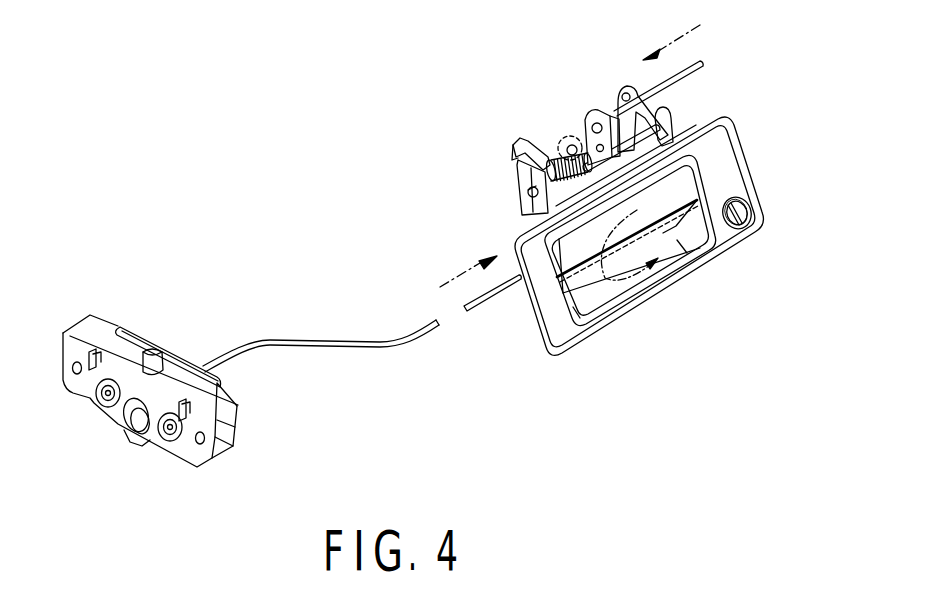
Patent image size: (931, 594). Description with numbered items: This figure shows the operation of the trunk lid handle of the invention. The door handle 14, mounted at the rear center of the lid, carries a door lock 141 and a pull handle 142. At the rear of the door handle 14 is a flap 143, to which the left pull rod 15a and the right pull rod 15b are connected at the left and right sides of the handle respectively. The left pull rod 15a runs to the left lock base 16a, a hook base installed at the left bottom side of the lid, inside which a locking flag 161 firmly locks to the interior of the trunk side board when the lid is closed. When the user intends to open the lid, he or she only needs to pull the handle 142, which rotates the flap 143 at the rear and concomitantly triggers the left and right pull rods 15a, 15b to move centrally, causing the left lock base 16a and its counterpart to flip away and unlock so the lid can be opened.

The door handle 14 is at (610, 298).
The door lock 141 is at (740, 212).
The handle 142 is at (633, 210).
The flap 143 is at (598, 113).
The left pull rod 15a is at (343, 342).
The right pull rod 15b is at (677, 84).
The left lock base 16a is at (110, 340).
The locking flag 161 is at (133, 445).